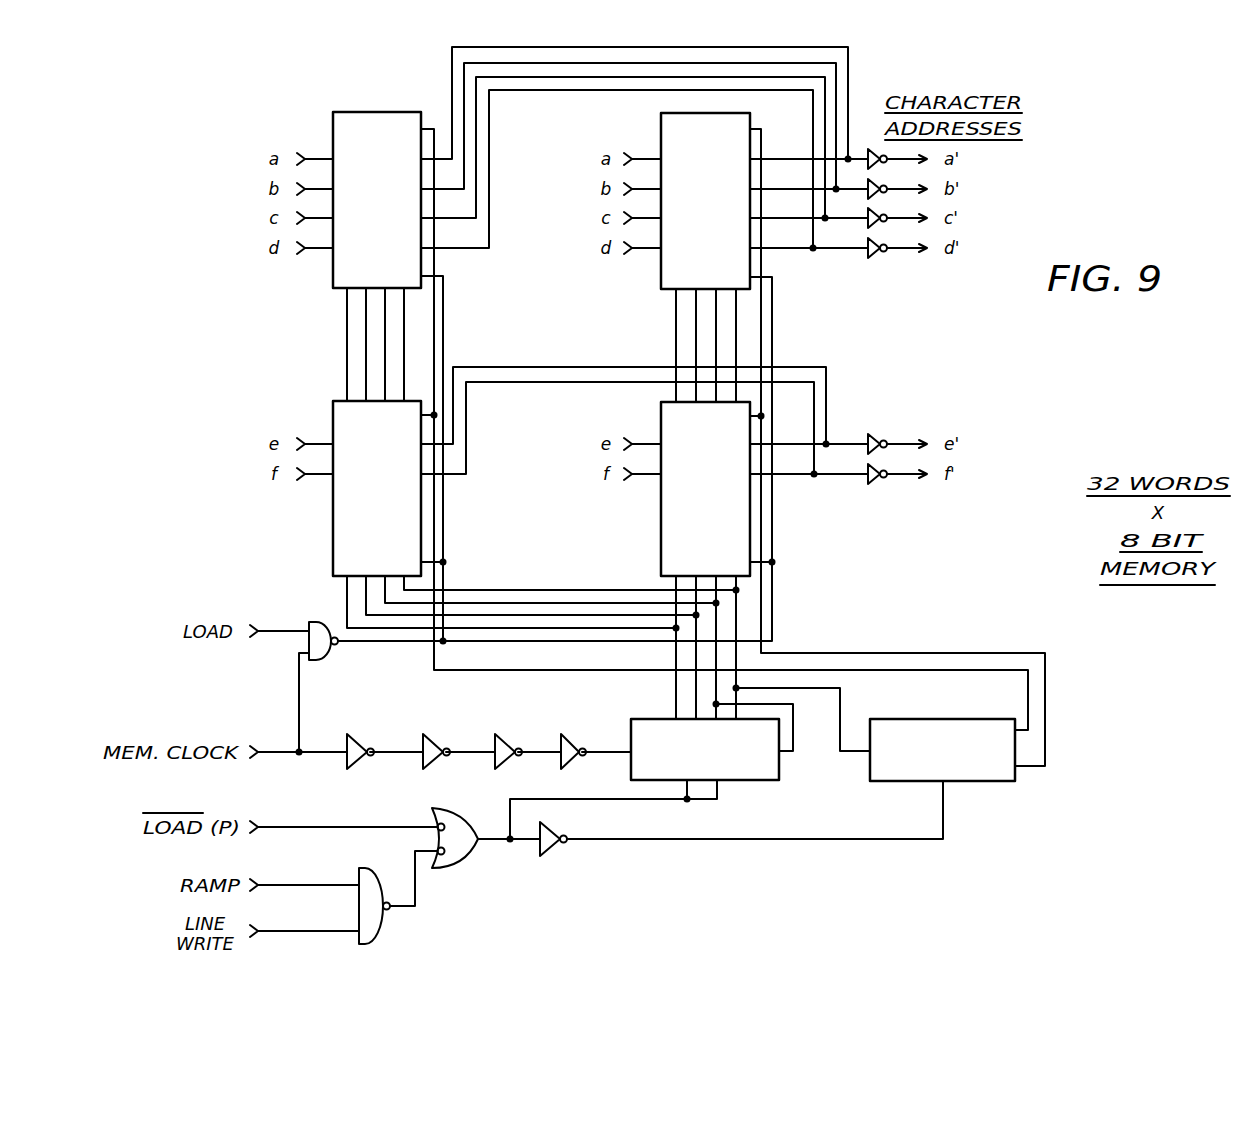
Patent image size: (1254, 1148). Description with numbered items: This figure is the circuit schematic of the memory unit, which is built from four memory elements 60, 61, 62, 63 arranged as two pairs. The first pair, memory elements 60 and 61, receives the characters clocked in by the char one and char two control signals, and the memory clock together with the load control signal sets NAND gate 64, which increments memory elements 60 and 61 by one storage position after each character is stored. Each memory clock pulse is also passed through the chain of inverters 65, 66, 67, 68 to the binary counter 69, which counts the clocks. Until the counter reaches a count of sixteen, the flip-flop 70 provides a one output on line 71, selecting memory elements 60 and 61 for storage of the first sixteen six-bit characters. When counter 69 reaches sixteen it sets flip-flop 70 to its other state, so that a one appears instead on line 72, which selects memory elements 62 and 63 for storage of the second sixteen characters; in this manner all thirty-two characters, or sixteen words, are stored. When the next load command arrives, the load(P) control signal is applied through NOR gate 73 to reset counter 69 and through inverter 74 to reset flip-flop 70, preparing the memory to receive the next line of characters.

The memory element 60 is at (332, 278).
The memory element 61 is at (338, 398).
The memory element 62 is at (660, 278).
The memory element 63 is at (660, 415).
The NAND gate 64 is at (310, 620).
The inverter 65 is at (355, 740).
The inverter 66 is at (433, 737).
The inverter 67 is at (507, 738).
The inverter 68 is at (572, 740).
The binary counter 69 is at (755, 783).
The flip-flop 70 is at (982, 782).
The line 71 is at (892, 670).
The line 72 is at (973, 653).
The NOR gate 73 is at (470, 822).
The inverter 74 is at (557, 847).